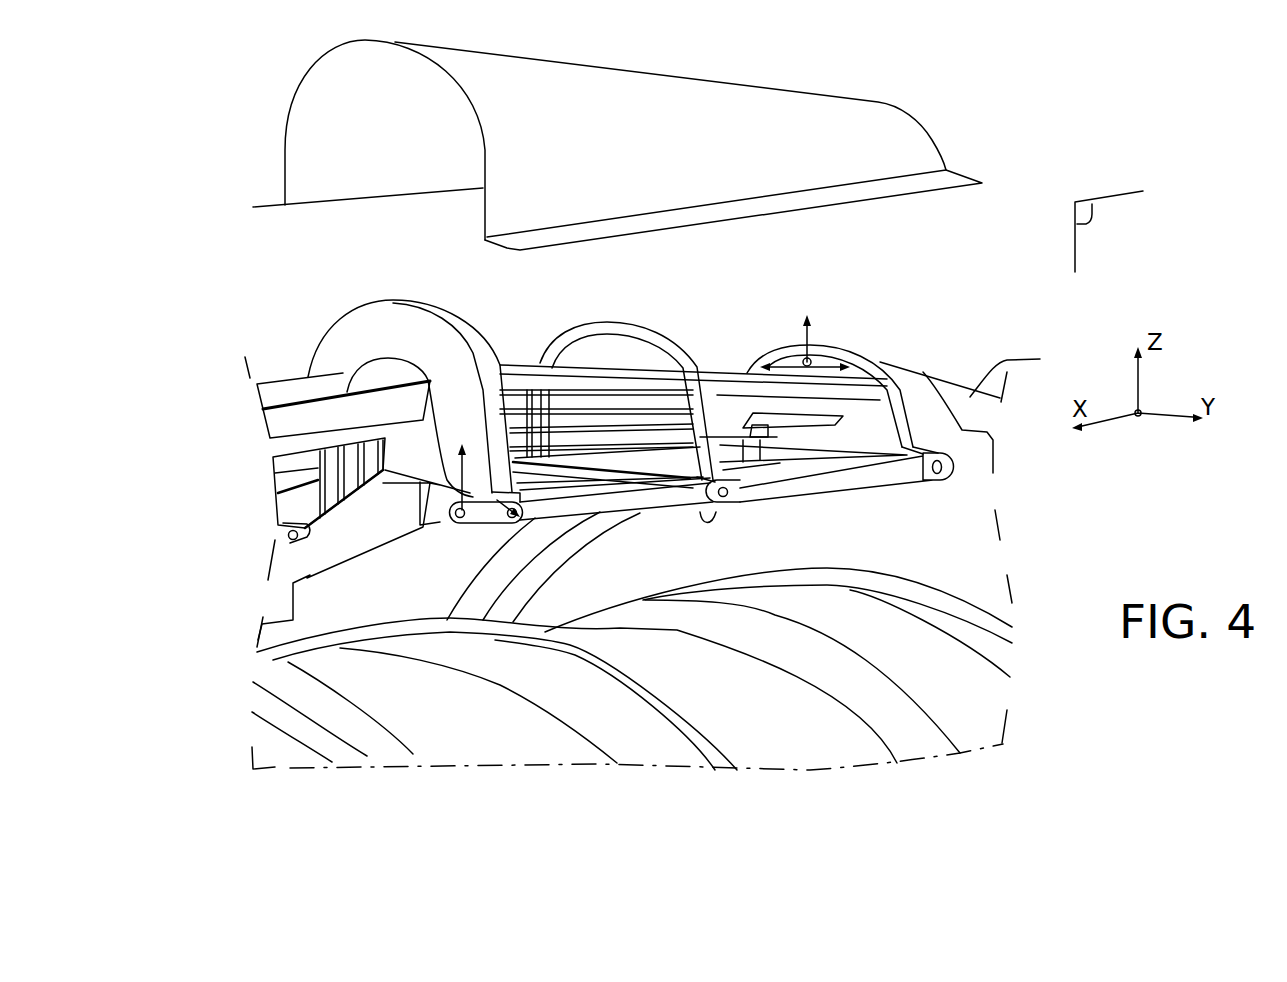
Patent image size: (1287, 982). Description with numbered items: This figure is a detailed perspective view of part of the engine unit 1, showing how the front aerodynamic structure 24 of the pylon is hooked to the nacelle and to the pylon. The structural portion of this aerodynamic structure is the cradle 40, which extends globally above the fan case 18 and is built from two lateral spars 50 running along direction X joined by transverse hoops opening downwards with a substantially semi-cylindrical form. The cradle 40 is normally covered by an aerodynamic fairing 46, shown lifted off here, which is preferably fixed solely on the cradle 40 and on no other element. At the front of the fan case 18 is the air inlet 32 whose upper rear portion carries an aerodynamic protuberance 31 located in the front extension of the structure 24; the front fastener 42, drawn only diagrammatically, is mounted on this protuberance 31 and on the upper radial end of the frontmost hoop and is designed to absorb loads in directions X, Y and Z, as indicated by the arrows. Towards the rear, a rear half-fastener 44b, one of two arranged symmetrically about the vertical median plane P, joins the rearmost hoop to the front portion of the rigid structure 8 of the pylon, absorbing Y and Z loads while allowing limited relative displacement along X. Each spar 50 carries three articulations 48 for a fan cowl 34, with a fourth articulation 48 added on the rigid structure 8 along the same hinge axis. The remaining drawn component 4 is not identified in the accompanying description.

The engine unit 1 is at (585, 788).
The cargo rack support structure 4 is at (287, 352).
The rigid structure 8 is at (264, 376).
The fan case 18 is at (622, 728).
The front aerodynamic structure 24 is at (163, 146).
The aerodynamic protuberance 31 is at (1000, 360).
The air inlet 32 is at (925, 395).
The fan cowl 34 is at (322, 622).
The cradle 40 is at (368, 322).
The front fastener 42 is at (855, 577).
The rear half-fastener 44b is at (440, 518).
The aerodynamic fairing 46 is at (280, 163).
The articulation 48 is at (297, 542).
The spar 50 is at (780, 443).
The vertical median plane P is at (1077, 215).